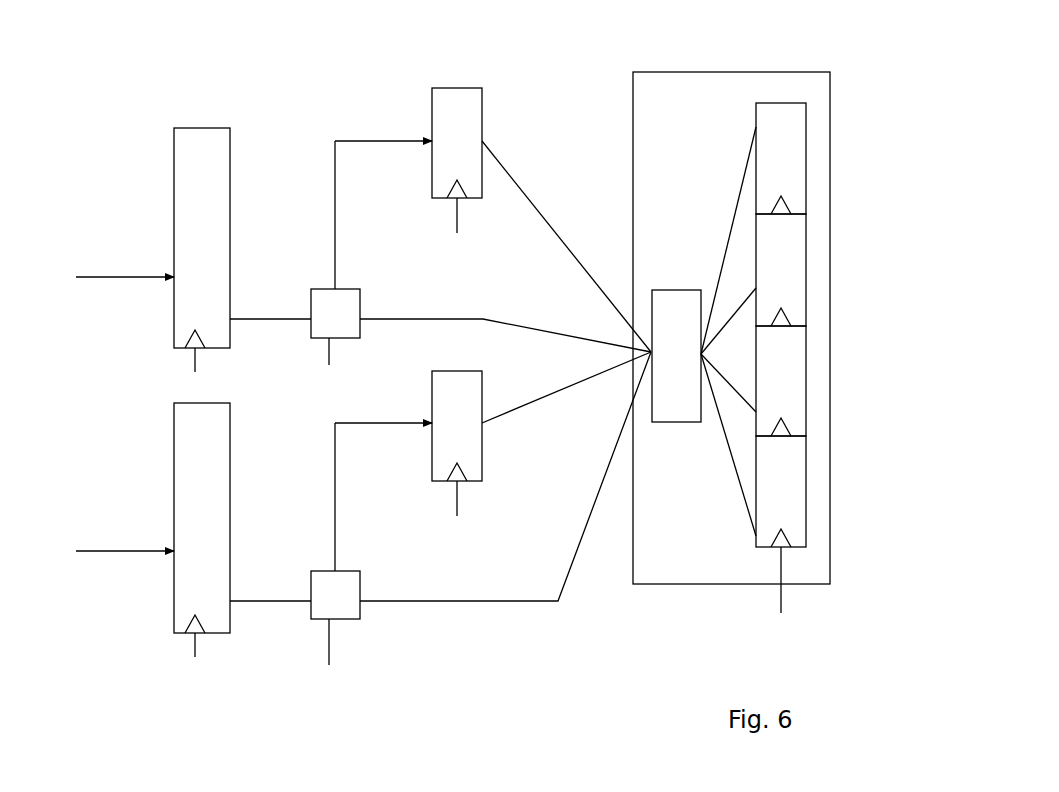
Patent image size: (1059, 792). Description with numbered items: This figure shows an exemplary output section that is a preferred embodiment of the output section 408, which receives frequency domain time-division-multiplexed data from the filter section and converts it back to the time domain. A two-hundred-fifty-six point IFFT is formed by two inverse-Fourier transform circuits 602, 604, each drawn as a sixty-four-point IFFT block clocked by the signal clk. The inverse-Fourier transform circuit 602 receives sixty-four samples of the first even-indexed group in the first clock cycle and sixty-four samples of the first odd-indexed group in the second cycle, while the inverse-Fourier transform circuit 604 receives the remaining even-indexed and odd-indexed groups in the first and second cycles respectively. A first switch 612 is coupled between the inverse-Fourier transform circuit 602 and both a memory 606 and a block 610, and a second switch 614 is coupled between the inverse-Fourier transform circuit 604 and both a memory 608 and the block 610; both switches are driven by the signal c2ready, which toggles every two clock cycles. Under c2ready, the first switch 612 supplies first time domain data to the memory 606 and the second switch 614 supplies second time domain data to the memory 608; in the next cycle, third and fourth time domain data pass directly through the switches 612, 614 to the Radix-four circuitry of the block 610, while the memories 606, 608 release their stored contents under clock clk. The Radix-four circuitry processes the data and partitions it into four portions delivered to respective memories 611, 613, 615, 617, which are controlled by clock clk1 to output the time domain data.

The output section 408 is at (179, 40).
The inverse-Fourier transform circuit 602 is at (174, 293).
The inverse-Fourier transform circuit 604 is at (174, 600).
The memory 606 is at (482, 116).
The memory 608 is at (482, 436).
The block 610 is at (650, 584).
The memory 611 is at (806, 496).
The first switch 612 is at (320, 288).
The memory 613 is at (802, 383).
The second switch 614 is at (340, 619).
The memory 615 is at (806, 272).
The memory 617 is at (806, 121).